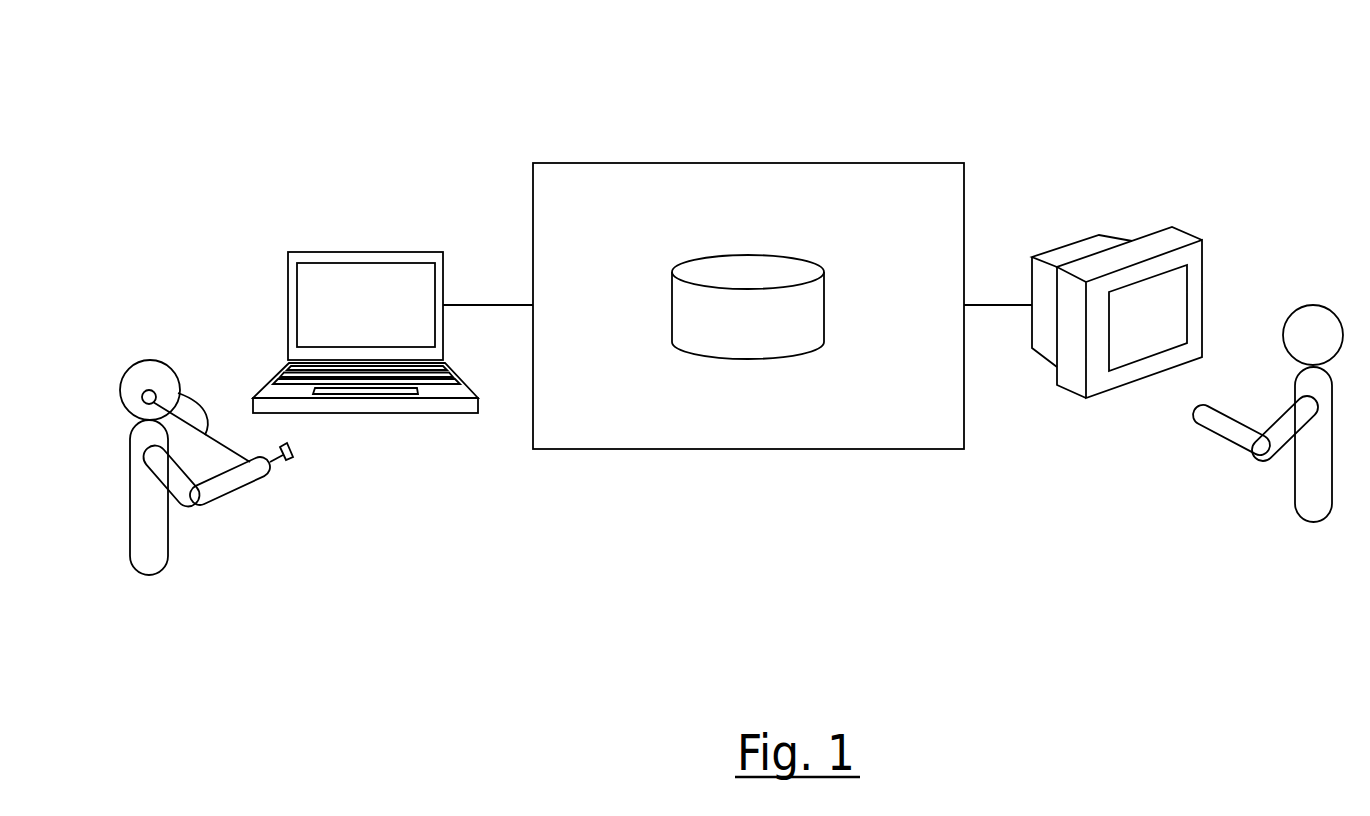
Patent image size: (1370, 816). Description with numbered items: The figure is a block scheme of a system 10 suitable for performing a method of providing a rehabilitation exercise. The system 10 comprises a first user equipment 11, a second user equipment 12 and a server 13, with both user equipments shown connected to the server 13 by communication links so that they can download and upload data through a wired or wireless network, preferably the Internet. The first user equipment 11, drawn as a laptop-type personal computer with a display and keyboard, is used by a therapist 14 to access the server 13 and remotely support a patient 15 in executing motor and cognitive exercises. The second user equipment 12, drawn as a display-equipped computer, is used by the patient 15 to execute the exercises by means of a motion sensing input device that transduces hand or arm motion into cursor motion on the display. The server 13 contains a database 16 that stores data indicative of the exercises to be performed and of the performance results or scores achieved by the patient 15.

The system 10 is at (262, 128).
The first user equipment 11 is at (365, 252).
The second user equipment 12 is at (1099, 235).
The server 13 is at (748, 306).
The therapist 14 is at (99, 406).
The patient 15 is at (1327, 266).
The database 16 is at (748, 307).